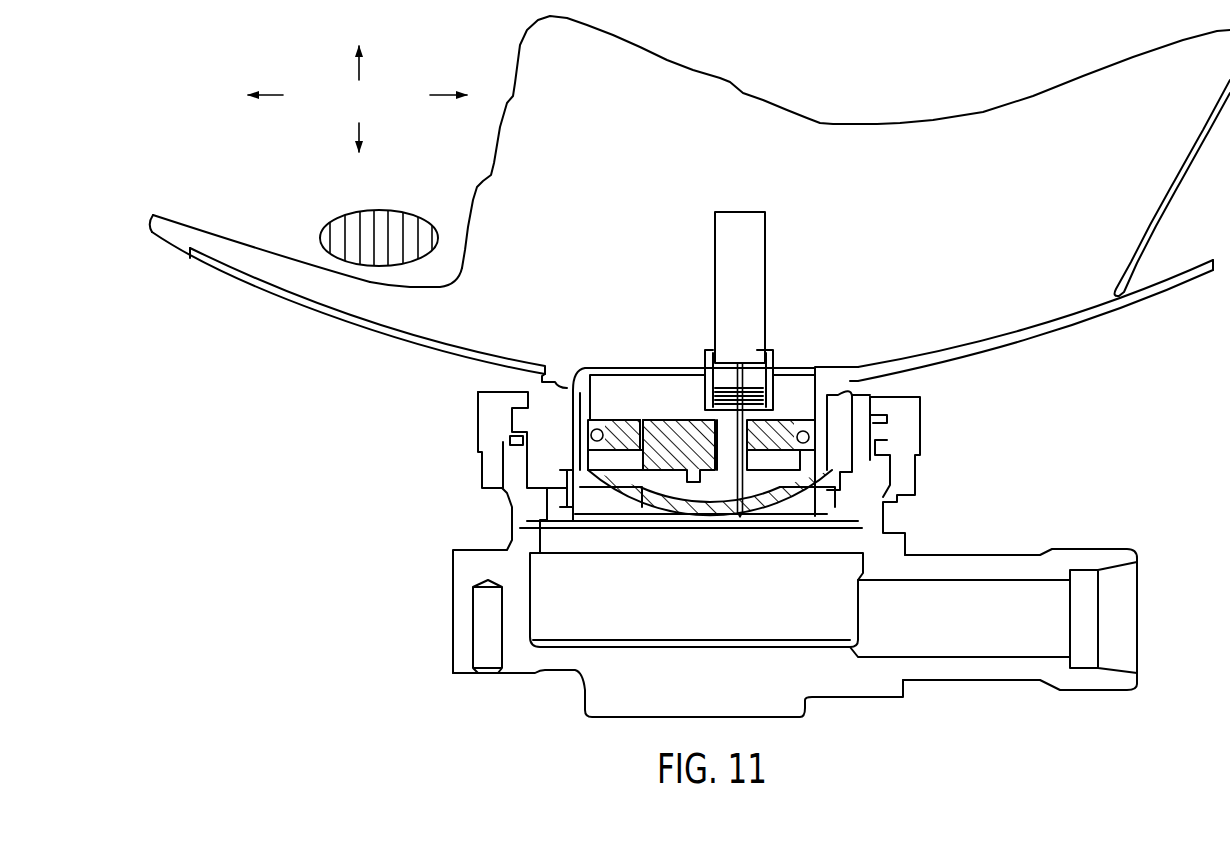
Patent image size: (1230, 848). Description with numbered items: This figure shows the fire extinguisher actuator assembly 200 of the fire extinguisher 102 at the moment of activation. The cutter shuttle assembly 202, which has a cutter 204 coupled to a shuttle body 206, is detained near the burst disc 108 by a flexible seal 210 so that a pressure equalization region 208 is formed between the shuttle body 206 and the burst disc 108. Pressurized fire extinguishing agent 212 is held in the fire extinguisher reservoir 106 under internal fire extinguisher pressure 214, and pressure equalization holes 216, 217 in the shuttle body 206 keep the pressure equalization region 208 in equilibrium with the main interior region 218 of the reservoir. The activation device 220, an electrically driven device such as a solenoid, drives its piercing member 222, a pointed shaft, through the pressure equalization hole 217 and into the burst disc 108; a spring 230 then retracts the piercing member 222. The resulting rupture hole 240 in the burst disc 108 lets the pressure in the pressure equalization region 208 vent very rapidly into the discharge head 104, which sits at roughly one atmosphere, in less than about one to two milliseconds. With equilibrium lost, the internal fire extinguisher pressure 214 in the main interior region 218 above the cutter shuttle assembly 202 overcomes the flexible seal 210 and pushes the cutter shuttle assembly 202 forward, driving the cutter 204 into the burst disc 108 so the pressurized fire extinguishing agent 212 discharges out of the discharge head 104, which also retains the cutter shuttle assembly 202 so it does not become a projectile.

The fire extinguisher 102 is at (372, 338).
The discharge head 104 is at (450, 662).
The fire extinguisher reservoir 106 is at (278, 220).
The burst disc 108 is at (627, 505).
The fire extinguisher actuator assembly 200 is at (798, 395).
The cutter shuttle assembly 202 is at (791, 462).
The cutter 204 is at (668, 452).
The shuttle body 206 is at (593, 417).
The pressure equalization region 208 is at (594, 459).
The flexible seal 210 is at (814, 437).
The pressurized fire extinguishing agent 212 is at (330, 214).
The internal fire extinguisher pressure 214 is at (372, 111).
The pressure equalization hole 216 is at (641, 417).
The pressure equalization hole 217 is at (748, 462).
The main interior region 218 is at (1068, 278).
The activation device 220 is at (768, 253).
The piercing member 222 is at (750, 417).
The spring 230 is at (721, 391).
The rupture hole 240 is at (736, 503).